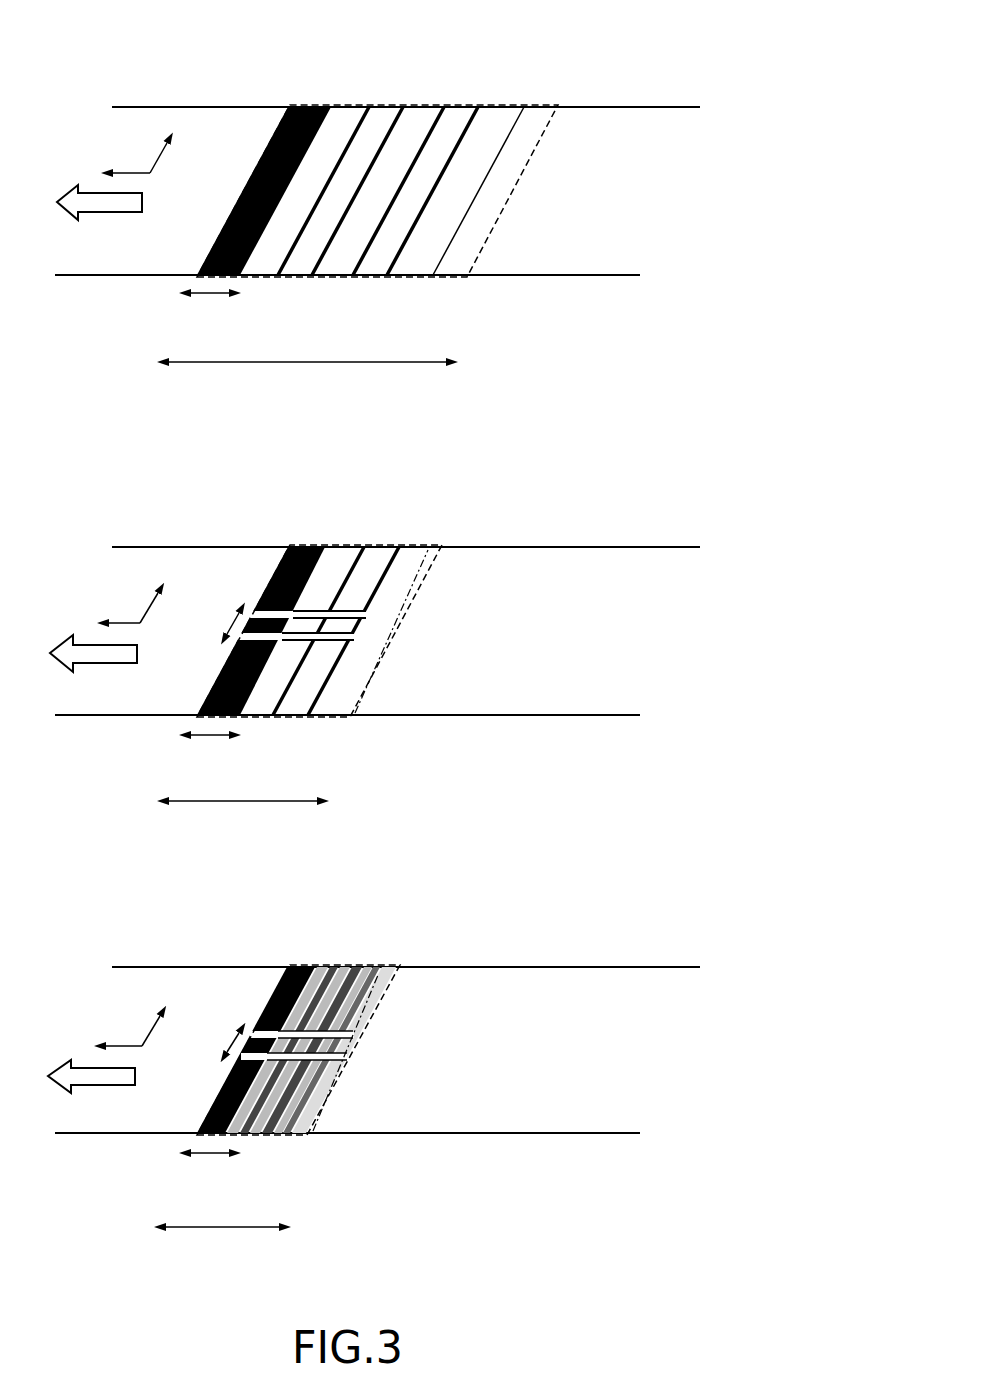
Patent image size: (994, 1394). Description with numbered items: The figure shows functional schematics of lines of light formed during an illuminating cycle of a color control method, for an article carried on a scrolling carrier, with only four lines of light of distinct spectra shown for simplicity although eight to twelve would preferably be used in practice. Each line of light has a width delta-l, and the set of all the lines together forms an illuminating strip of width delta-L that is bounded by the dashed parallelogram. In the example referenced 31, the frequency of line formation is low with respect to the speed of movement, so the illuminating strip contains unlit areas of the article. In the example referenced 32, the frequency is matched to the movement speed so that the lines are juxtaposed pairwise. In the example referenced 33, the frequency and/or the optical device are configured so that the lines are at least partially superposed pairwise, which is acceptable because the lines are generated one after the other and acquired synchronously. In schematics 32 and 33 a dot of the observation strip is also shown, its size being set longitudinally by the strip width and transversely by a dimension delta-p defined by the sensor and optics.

The example of line formation with low frequency 31 is at (73, 82).
The example of line formation with matched frequency 32 is at (73, 522).
The example of line formation with superposed lines 33 is at (73, 942).